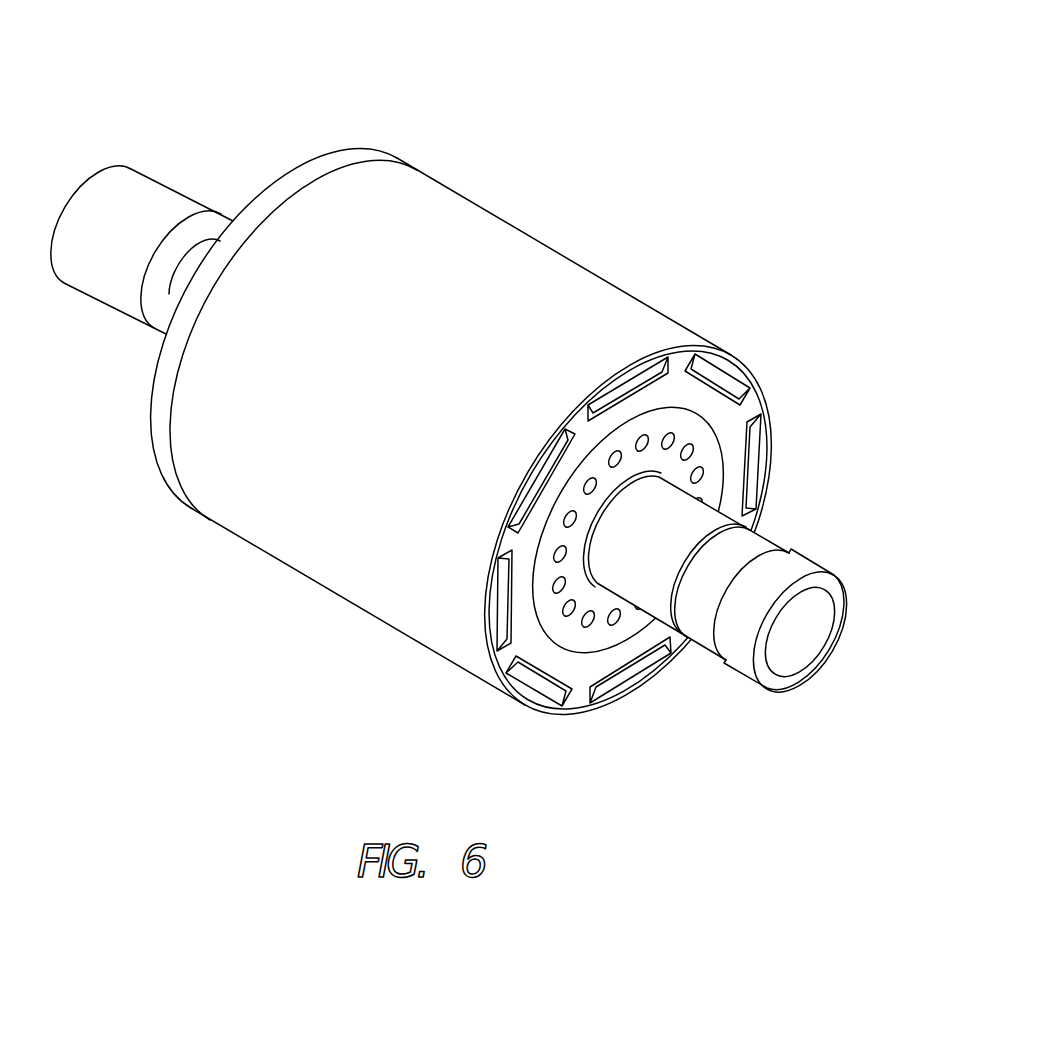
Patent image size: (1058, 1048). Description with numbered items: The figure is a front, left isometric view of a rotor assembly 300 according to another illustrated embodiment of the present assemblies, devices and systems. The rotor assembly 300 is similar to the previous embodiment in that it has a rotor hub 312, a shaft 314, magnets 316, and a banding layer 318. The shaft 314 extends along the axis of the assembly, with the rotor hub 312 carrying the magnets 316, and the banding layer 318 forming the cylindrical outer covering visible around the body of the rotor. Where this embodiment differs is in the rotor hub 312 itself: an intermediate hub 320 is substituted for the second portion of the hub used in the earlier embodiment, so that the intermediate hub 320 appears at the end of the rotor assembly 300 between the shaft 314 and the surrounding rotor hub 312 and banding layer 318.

The rotor assembly 300 is at (469, 402).
The rotor hub 312 is at (607, 658).
The shaft 314 is at (760, 537).
The magnets 316 is at (643, 670).
The banding layer 318 is at (556, 252).
The intermediate hub 320 is at (690, 432).